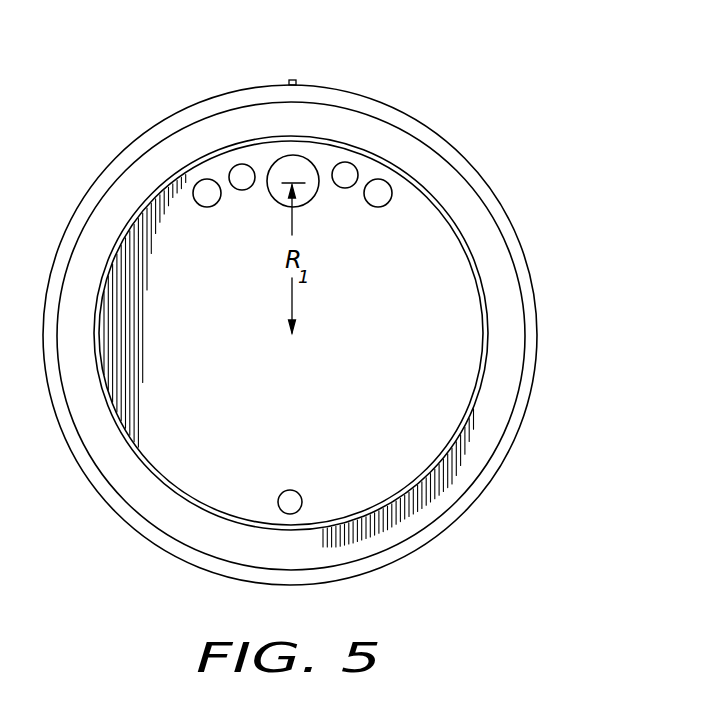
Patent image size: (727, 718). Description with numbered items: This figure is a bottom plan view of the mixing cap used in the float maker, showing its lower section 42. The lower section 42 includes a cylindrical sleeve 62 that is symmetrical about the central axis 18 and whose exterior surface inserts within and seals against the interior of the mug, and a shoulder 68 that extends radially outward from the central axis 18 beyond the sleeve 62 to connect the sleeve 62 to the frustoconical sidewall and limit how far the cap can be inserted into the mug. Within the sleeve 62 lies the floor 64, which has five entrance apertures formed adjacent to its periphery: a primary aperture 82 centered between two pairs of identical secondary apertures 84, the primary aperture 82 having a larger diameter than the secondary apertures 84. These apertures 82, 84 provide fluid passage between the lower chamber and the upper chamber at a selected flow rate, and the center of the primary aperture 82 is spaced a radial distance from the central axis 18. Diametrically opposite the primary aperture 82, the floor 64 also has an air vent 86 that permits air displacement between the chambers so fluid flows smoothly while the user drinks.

The central axis 18 is at (292, 333).
The lower section 42 is at (495, 148).
The cylindrical sleeve 62 is at (483, 327).
The floor 64 is at (433, 247).
The shoulder 68 is at (507, 373).
The primary aperture 82 is at (297, 168).
The secondary apertures 84 is at (240, 173).
The air aperture or vent 86 is at (283, 508).